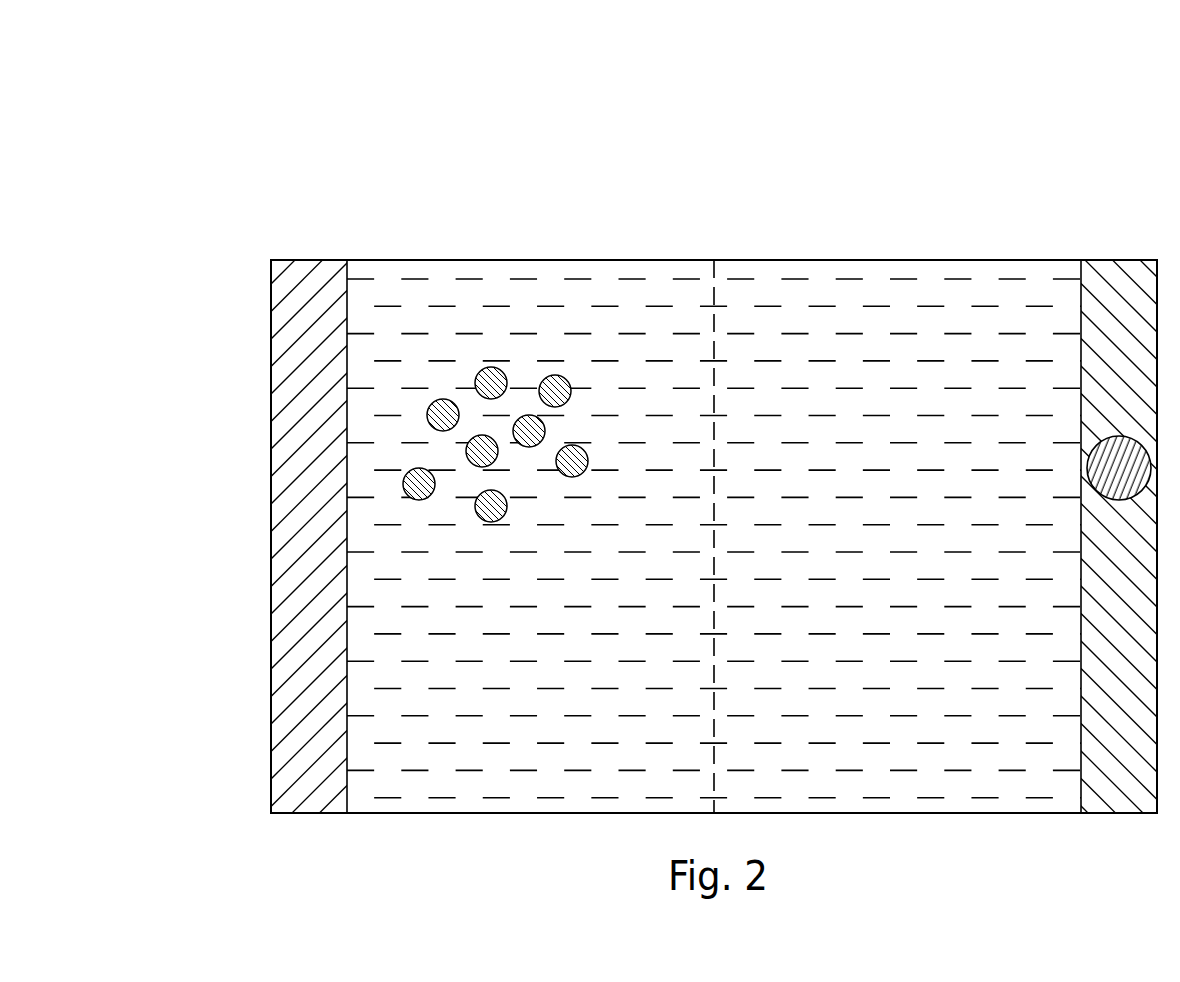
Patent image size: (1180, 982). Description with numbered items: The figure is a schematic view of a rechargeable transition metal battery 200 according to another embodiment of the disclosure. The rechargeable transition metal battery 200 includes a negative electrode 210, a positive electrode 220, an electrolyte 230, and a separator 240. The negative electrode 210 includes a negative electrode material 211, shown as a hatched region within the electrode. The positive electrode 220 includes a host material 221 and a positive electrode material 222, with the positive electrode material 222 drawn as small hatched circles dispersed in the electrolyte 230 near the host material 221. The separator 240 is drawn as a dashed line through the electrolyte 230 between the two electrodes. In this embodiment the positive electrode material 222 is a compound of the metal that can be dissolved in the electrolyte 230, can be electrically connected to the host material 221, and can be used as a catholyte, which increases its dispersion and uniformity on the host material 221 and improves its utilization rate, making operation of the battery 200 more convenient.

The rechargeable transition metal battery 200 is at (148, 54).
The negative electrode 210 is at (1118, 323).
The negative electrode material 211 is at (1117, 468).
The positive electrode 220 is at (310, 152).
The host material 221 is at (313, 315).
The positive electrode material 222 is at (443, 415).
The electrolyte 230 is at (852, 338).
The separator 240 is at (713, 298).